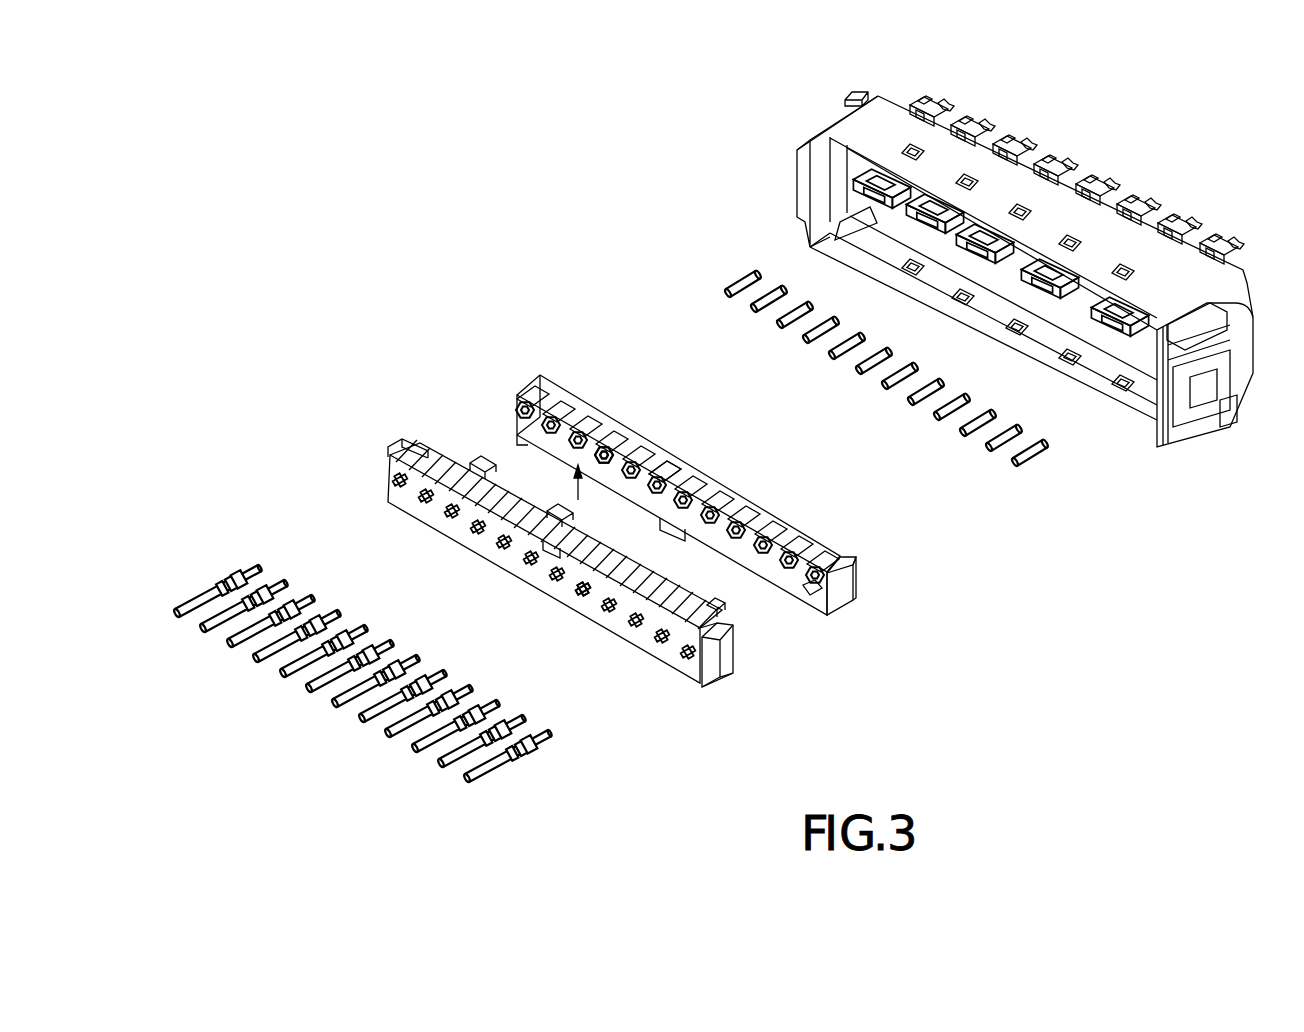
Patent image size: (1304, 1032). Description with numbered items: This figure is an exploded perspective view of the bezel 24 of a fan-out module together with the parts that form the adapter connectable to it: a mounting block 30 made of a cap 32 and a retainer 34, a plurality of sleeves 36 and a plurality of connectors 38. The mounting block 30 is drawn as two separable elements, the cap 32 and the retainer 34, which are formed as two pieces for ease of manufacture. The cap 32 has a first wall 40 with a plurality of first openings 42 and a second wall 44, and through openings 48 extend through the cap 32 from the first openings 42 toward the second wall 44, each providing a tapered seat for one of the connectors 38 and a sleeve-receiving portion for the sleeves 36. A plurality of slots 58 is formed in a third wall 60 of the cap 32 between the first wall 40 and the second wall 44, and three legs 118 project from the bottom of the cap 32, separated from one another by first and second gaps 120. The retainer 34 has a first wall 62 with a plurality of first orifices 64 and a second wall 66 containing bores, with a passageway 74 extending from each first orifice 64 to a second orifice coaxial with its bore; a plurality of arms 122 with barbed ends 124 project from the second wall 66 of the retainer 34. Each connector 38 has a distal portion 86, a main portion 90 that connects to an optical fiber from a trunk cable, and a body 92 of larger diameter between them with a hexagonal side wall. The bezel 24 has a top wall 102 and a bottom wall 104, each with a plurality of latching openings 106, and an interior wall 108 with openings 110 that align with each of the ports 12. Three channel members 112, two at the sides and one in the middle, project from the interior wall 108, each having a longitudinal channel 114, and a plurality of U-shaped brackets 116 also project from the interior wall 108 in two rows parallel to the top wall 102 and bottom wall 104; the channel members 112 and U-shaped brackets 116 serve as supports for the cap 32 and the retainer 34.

The ports 12 is at (950, 108).
The bezel 24 is at (992, 264).
The mounting block 30 is at (533, 358).
The cap 32 is at (708, 505).
The retainer 34 is at (617, 590).
The sleeves 36 is at (1030, 458).
The connectors 38 is at (394, 703).
The first wall 40 is at (820, 593).
The first openings 42 is at (812, 560).
The second wall 44 is at (777, 512).
The through openings 48 is at (720, 520).
The slots 58 is at (600, 430).
The third wall 60 is at (643, 447).
The first wall 62 is at (692, 673).
The first orifices 64 is at (653, 640).
The second wall 66 is at (667, 588).
The passageway 74 is at (600, 623).
The distal portion 86 is at (547, 737).
The main portion 90 is at (477, 775).
The body 92 is at (530, 753).
The top wall 102 is at (1015, 207).
The bottom wall 104 is at (1090, 373).
The latching openings 106 is at (1073, 243).
The interior wall 108 is at (913, 238).
The openings 110 is at (960, 265).
The channel members 112 is at (865, 195).
The longitudinal channel 114 is at (863, 167).
The U-shaped brackets 116 is at (1050, 327).
The legs 118 is at (517, 436).
The gaps 120 is at (578, 500).
The arms 122 is at (720, 607).
The barbed ends 124 is at (722, 600).